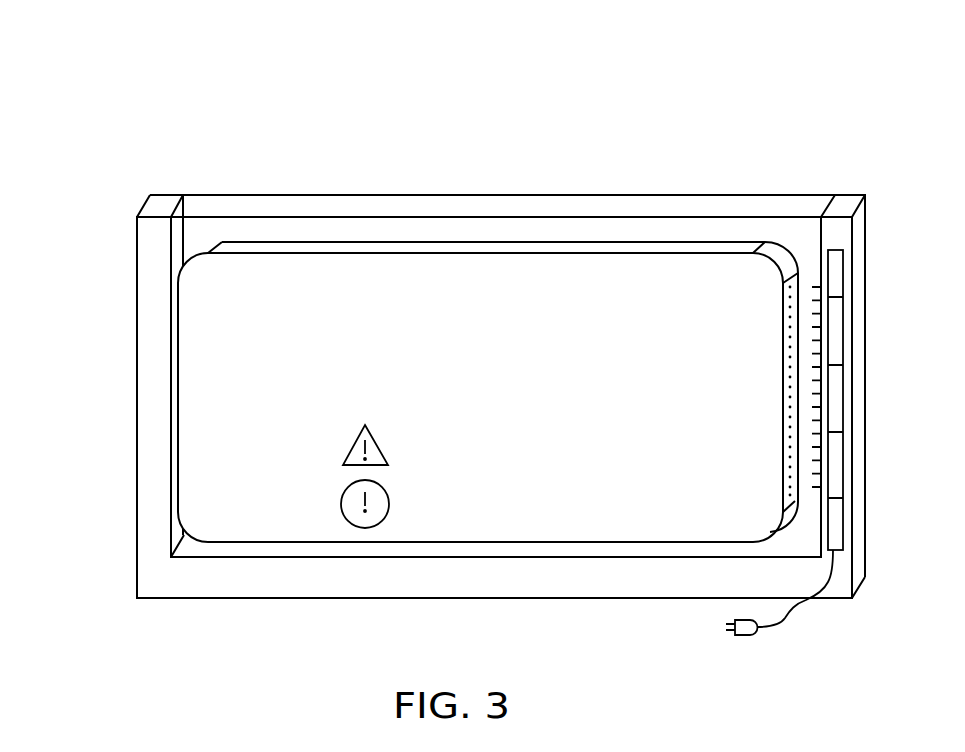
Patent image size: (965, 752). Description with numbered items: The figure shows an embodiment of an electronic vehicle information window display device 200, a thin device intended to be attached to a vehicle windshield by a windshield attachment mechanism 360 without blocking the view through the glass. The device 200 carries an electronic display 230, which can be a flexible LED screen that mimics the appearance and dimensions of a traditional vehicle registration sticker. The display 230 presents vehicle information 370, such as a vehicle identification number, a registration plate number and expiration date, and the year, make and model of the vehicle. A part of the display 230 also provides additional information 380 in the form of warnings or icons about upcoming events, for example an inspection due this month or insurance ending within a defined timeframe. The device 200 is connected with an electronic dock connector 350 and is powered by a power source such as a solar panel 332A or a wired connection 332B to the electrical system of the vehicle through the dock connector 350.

The electronic vehicle information window display device 200 is at (146, 130).
The windshield attachment mechanism 360 is at (138, 255).
The electronic display 230 is at (177, 367).
The vehicle information 370 is at (343, 322).
The additional information (warning) 380 is at (321, 479).
The electronic dock connector 350 is at (795, 303).
The solar panel 332A is at (845, 333).
The wired connection 332B is at (788, 615).